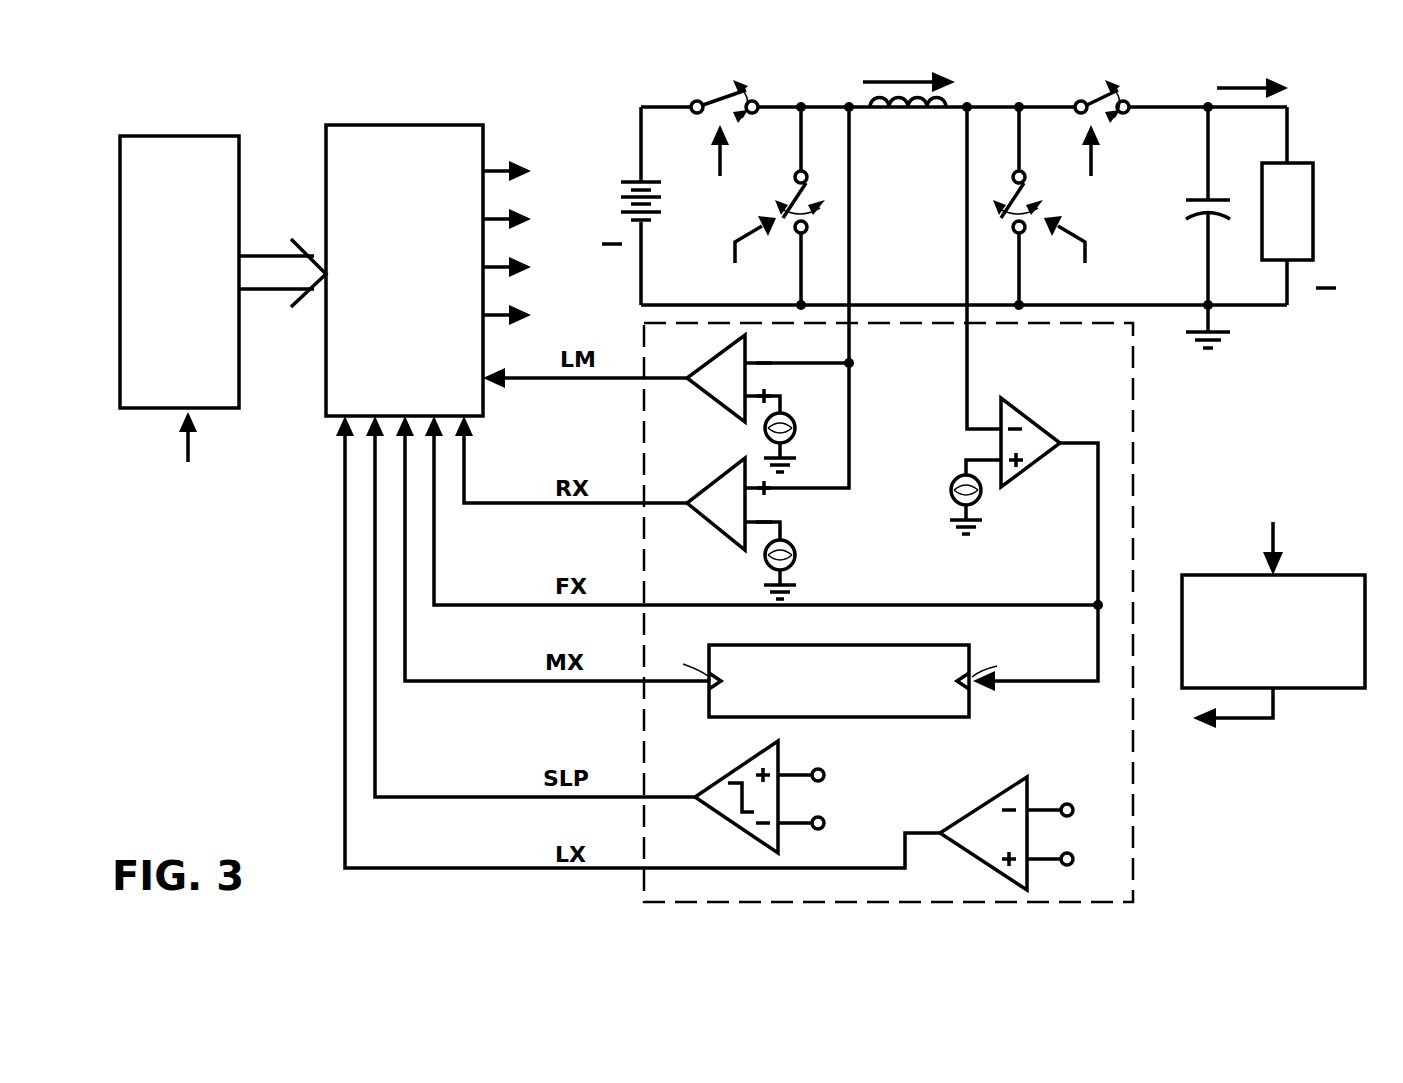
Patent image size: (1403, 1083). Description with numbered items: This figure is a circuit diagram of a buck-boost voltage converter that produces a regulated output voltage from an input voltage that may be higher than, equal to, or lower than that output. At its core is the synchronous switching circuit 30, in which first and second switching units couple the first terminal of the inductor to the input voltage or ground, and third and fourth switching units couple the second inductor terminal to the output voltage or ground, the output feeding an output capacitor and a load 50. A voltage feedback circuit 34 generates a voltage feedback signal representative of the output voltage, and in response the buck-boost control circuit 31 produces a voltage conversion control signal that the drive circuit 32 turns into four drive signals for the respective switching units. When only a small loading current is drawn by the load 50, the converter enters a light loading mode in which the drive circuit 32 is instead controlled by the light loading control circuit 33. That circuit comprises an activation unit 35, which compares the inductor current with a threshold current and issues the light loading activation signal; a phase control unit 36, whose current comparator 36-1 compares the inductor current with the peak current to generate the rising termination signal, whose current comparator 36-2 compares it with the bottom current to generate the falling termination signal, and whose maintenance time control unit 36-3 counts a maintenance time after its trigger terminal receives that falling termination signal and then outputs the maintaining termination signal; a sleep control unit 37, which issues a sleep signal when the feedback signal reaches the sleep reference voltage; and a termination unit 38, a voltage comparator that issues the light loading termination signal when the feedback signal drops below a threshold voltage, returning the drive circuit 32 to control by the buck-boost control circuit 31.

The synchronous switching circuit 30 is at (1335, 84).
The buck-boost control circuit 31 is at (180, 136).
The drive circuit 32 is at (406, 125).
The light loading control circuit 33 is at (1133, 462).
The voltage feedback circuit 34 is at (1320, 575).
The activation unit 35 is at (862, 370).
The phase control unit 36 is at (880, 557).
The current comparator 36-1 is at (706, 490).
The current comparator 36-2 is at (1028, 420).
The maintenance time control unit 36-3 is at (952, 646).
The sleep control unit 37 is at (716, 755).
The termination unit 38 is at (1052, 760).
The load 50 is at (1268, 163).